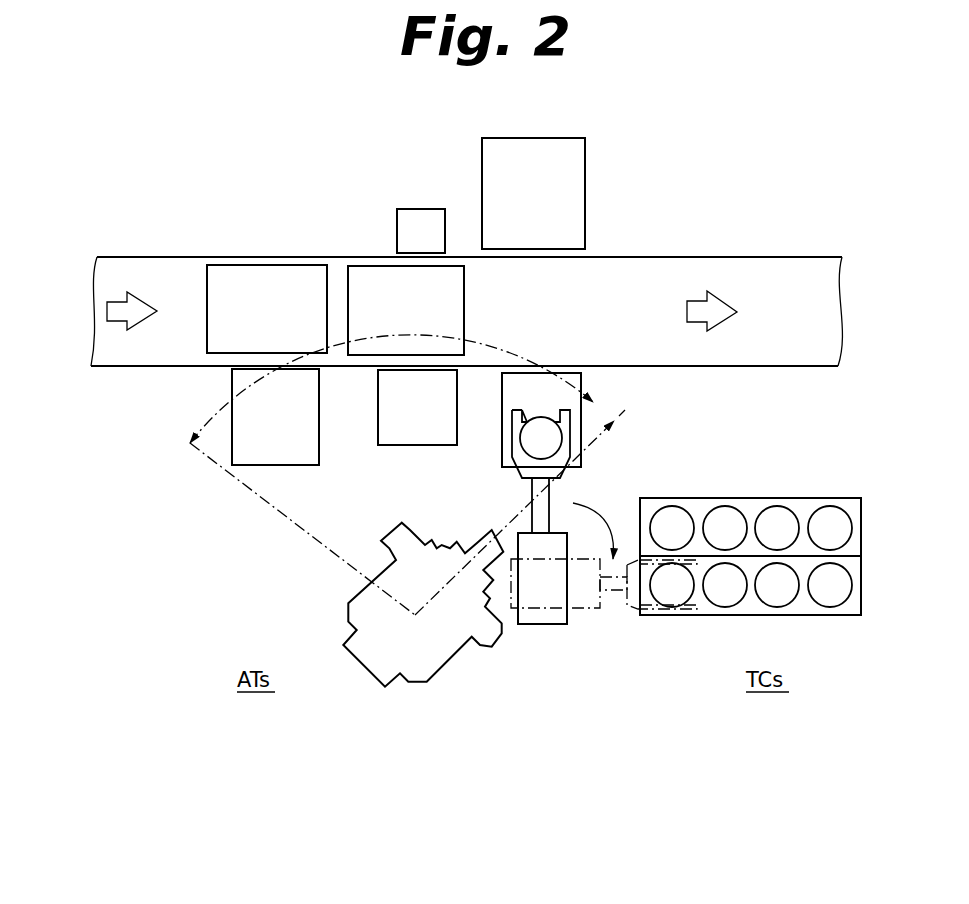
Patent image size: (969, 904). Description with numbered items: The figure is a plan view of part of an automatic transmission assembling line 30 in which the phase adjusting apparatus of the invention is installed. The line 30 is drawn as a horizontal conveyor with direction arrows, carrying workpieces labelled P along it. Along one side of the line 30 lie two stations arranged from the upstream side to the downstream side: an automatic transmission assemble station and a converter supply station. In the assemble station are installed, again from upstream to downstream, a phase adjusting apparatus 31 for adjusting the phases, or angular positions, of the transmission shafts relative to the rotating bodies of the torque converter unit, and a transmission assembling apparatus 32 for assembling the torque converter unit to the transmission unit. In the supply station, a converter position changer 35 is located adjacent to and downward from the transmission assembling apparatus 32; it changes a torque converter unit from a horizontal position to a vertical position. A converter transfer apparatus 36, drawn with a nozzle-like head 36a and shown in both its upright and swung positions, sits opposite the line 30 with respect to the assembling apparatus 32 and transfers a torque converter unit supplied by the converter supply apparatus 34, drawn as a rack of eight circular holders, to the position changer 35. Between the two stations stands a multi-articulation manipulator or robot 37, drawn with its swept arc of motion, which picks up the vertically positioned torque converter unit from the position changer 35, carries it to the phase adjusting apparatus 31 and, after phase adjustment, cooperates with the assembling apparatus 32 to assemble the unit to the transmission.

The automatic transmission assembling line 30 is at (753, 251).
The printed circuit board P is at (267, 282).
The phase adjusting apparatus 31 is at (247, 472).
The transmission assembling apparatus 32 is at (386, 450).
The converter supply apparatus 34 is at (806, 495).
The converter position changer 35 is at (600, 402).
The converter transfer apparatus 36 is at (548, 634).
The suction nozzle 36a is at (565, 443).
The multi-articulation manipulator or robot 37 is at (420, 692).